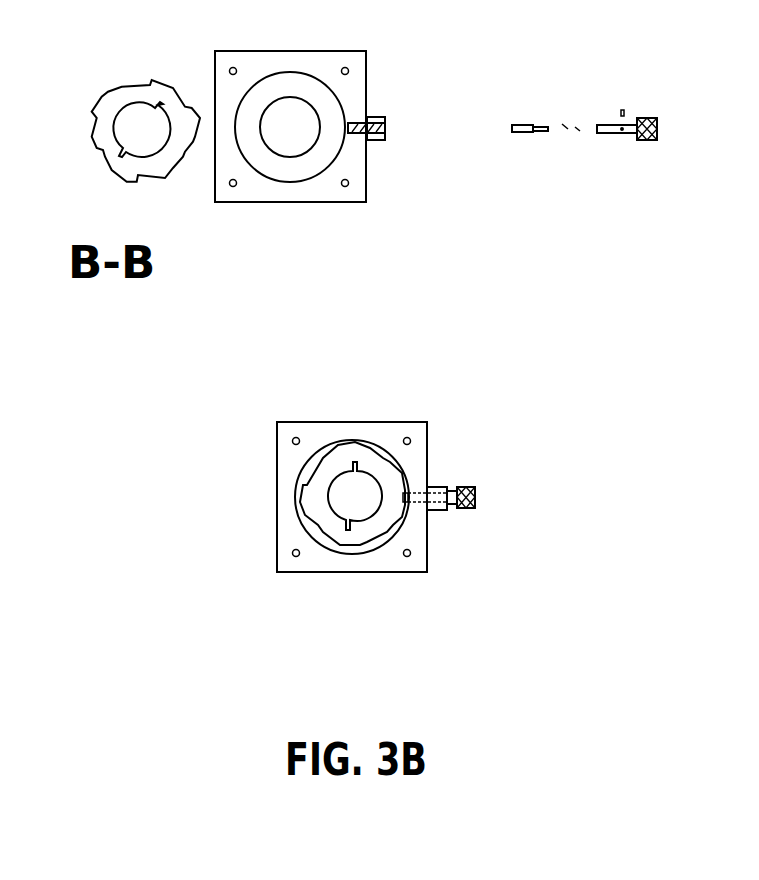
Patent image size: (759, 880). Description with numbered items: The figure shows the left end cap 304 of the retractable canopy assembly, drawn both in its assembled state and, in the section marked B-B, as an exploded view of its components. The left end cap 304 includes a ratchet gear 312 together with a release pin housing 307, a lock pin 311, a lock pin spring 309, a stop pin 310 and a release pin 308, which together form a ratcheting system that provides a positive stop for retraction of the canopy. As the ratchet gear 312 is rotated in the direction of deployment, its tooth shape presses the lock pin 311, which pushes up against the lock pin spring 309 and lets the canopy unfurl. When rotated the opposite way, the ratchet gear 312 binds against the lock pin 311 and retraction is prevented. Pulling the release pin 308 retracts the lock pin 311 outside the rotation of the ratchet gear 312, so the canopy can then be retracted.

The left end cap 304 is at (316, 560).
The release pin housing 307 is at (380, 118).
The release pin 308 is at (657, 120).
The lock pin spring 309 is at (566, 140).
The stop pin 310 is at (627, 109).
The lock pin 311 is at (527, 123).
The ratchet gear 312 is at (122, 87).